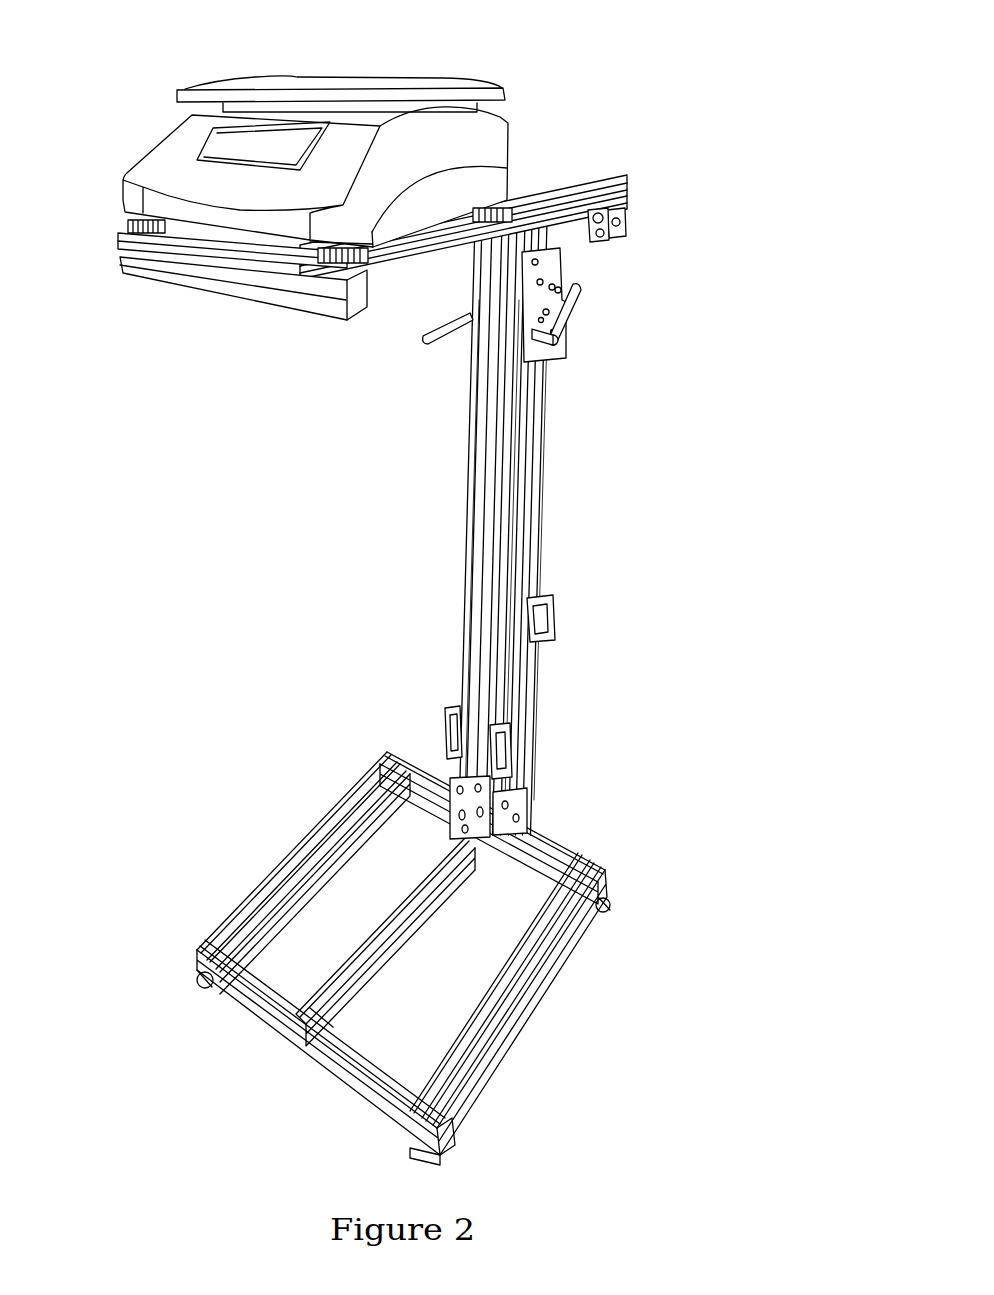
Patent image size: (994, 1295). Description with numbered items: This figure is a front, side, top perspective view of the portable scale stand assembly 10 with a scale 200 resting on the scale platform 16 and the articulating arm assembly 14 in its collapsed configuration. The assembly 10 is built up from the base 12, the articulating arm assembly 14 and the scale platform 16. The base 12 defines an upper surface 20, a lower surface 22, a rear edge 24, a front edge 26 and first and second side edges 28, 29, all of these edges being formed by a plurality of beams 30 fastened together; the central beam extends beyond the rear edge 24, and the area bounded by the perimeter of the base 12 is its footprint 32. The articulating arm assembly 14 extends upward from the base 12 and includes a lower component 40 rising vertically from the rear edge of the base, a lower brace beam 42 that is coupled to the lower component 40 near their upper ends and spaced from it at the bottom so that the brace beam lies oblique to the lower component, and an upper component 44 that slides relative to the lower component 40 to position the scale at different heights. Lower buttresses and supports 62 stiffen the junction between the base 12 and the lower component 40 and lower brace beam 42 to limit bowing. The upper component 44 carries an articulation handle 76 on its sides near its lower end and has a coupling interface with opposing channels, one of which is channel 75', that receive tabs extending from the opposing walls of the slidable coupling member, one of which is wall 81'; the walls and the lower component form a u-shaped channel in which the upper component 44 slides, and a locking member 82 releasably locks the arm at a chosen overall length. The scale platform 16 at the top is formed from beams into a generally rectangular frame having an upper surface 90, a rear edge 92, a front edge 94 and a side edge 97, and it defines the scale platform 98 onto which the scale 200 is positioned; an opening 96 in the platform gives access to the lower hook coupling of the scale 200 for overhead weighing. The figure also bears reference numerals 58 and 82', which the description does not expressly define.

The portable scale stand assembly 10 is at (117, 465).
The base 12 is at (283, 836).
The articulating arm assembly 14 is at (452, 508).
The scale platform 16 is at (622, 170).
The upper surface 20 is at (372, 775).
The lower surface 22 is at (487, 1070).
The rear edge 24 is at (557, 850).
The front edge 26 is at (307, 1055).
The first side edge 28 is at (328, 817).
The second side edge 29 is at (518, 980).
The beams 30 is at (248, 904).
The footprint 32 is at (298, 968).
The lower component 40 is at (510, 558).
The lower brace beam 42 is at (543, 503).
The upper component 44 is at (472, 562).
The clip 58 is at (552, 618).
The lower buttresses and supports 62 is at (490, 848).
The channel 75' is at (574, 323).
The articulation handle 76 is at (445, 732).
The wall 81' is at (595, 315).
The locking member 82 is at (580, 347).
The clamp lever 82' is at (444, 365).
The upper surface 90 is at (470, 217).
The rear edge 92 is at (617, 210).
The front edge 94 is at (246, 298).
The opening 96 is at (383, 262).
The side edge 97 is at (573, 212).
The scale platform 98 is at (437, 72).
The scale 200 is at (252, 86).